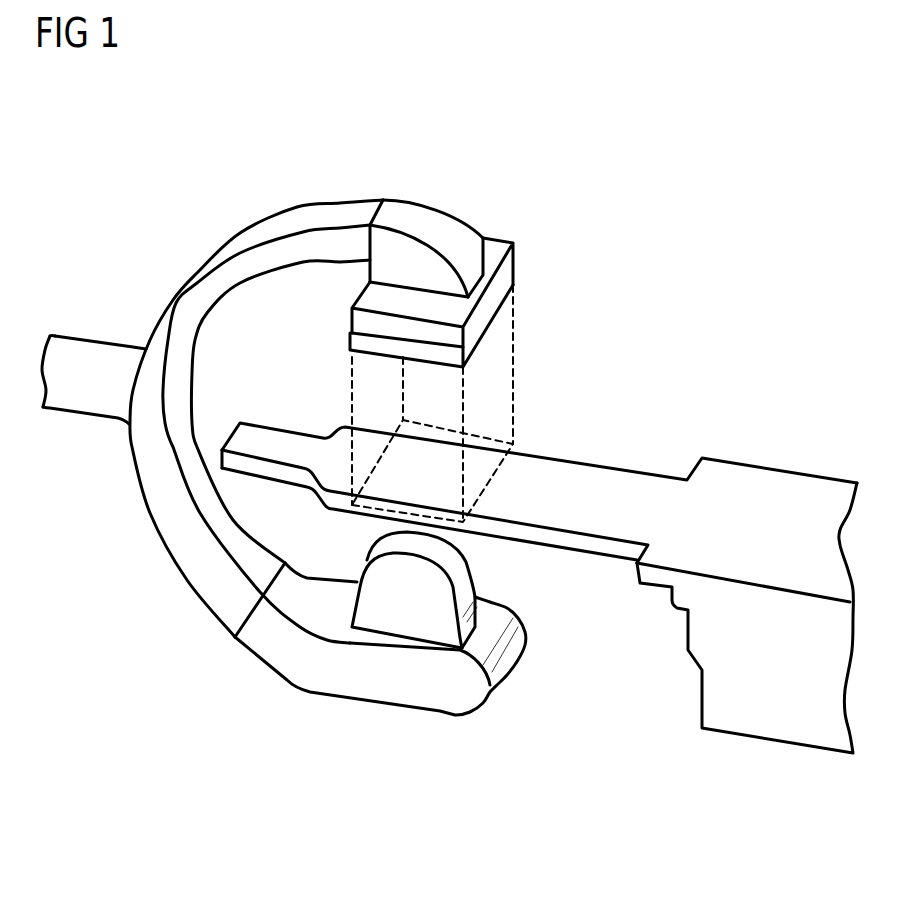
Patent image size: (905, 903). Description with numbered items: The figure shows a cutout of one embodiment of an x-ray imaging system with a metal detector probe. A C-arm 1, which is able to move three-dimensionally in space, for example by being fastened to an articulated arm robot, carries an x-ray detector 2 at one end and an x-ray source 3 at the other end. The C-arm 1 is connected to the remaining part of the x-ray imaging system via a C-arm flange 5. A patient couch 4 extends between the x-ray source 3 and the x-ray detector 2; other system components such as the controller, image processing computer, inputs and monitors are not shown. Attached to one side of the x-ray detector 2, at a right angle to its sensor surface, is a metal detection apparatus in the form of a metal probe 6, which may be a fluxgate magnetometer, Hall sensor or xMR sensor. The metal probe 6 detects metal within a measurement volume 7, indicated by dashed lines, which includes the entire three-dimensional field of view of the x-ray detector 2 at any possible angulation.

The C-arm 1 is at (286, 227).
The x-ray detector 2 is at (497, 252).
The x-ray source 3 is at (467, 573).
The patient couch 4 is at (627, 482).
The C-arm flange 5 is at (78, 337).
The metal probe 6 is at (350, 342).
The measurement volume 7 is at (505, 373).